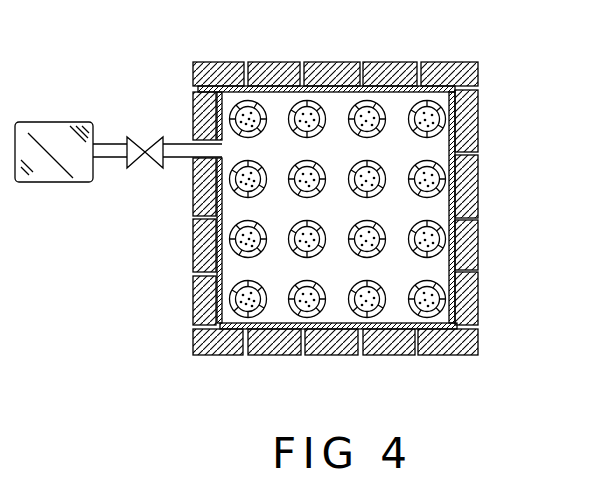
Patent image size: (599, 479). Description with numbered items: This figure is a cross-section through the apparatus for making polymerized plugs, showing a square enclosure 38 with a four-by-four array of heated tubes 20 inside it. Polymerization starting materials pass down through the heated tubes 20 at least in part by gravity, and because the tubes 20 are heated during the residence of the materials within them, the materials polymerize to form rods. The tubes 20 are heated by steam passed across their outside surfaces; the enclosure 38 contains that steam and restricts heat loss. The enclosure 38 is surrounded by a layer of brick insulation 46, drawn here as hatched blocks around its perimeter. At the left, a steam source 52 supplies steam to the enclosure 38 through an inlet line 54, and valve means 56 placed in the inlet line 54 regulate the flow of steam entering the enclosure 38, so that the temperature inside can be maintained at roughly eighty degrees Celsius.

The heated tubes 20 is at (233, 93).
The enclosure 38 is at (222, 248).
The brick insulation 46 is at (330, 86).
The steam source 52 is at (32, 122).
The inlet line 54 is at (182, 143).
The valve means 56 is at (137, 162).